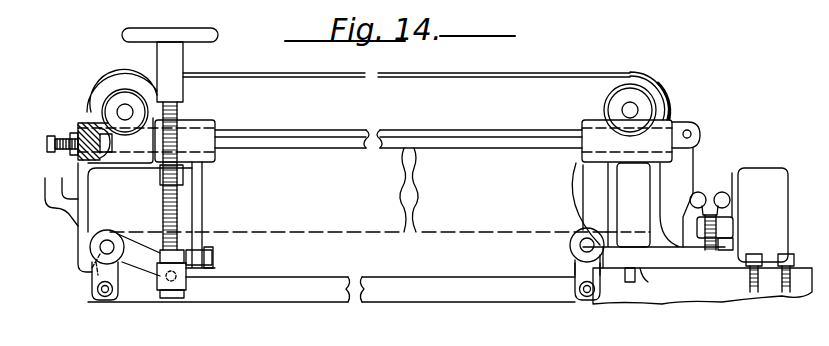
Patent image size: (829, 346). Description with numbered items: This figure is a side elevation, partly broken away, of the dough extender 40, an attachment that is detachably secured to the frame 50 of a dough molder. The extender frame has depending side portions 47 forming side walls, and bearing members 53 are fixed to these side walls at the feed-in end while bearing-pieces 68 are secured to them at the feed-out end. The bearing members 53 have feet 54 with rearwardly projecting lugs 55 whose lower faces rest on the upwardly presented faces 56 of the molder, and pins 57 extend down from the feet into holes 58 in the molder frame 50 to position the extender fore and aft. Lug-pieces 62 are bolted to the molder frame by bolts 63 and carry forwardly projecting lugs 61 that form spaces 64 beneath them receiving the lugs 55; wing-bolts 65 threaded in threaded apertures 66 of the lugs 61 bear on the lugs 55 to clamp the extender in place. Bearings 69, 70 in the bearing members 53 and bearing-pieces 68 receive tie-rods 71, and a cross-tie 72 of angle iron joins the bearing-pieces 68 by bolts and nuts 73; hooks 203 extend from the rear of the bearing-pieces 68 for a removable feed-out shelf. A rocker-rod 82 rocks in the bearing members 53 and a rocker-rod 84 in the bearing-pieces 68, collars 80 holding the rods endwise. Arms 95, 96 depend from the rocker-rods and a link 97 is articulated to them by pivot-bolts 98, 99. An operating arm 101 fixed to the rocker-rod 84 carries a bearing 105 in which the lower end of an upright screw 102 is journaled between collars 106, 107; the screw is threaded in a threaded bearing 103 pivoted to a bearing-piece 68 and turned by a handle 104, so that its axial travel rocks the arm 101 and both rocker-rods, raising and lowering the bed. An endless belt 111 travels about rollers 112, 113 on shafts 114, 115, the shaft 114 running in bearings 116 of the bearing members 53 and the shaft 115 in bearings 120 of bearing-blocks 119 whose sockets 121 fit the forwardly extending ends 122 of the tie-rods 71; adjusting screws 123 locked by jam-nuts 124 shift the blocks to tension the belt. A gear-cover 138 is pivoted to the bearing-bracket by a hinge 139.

The dough extender 40 is at (604, 66).
The depending side portions 47 is at (329, 227).
The molder frame 50 is at (760, 298).
The bearing members 53 is at (607, 196).
The feet 54 is at (612, 275).
The rearwardly projecting lugs 55 is at (708, 272).
The upwardly presented faces 56 is at (665, 275).
The pins 57 is at (650, 300).
The holes 58 is at (630, 283).
The lugs 61 is at (733, 185).
The lug-pieces 62 is at (785, 232).
The bolts 63 is at (756, 257).
The spaces 64 is at (724, 243).
The wing-bolts 65 is at (711, 198).
The threaded apertures 66 is at (722, 232).
The bearing-pieces 68 is at (202, 190).
The bearings 69 is at (580, 152).
The bearings 70 is at (206, 126).
The tie-rods 71 is at (428, 136).
The cross-tie 72 is at (213, 268).
The bolts and nuts 73 is at (213, 255).
The collars 80 is at (90, 243).
The rocker-rod 82 is at (578, 245).
The rocker-rod 84 is at (92, 272).
The depending arm 95 is at (575, 262).
The depending arm 96 is at (103, 290).
The link 97 is at (405, 280).
The pivot-bolt 98 is at (586, 297).
The pivot-bolt 99 is at (102, 301).
The operating arm 101 is at (135, 243).
The screw 102 is at (163, 200).
The threaded bearing 103 is at (160, 180).
The handle 104 is at (214, 40).
The bearing 105 is at (187, 280).
The collar 106 is at (161, 253).
The collar 107 is at (160, 294).
The endless belt 111 is at (497, 78).
The roller 112 is at (636, 84).
The roller 113 is at (129, 97).
The shaft 114 is at (658, 100).
The shaft 115 is at (122, 110).
The bearings 116 is at (634, 108).
The bearing-blocks 119 is at (95, 126).
The bearings 120 is at (105, 112).
The sockets 121 is at (96, 160).
The forwardly extending ends 122 is at (86, 136).
The adjusting screws 123 is at (50, 138).
The jam-nuts 124 is at (78, 155).
The gear-cover 138 is at (672, 109).
The hinge 139 is at (695, 130).
The hooks 203 is at (57, 202).